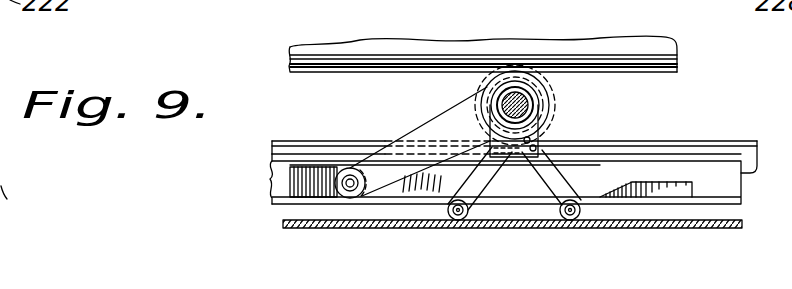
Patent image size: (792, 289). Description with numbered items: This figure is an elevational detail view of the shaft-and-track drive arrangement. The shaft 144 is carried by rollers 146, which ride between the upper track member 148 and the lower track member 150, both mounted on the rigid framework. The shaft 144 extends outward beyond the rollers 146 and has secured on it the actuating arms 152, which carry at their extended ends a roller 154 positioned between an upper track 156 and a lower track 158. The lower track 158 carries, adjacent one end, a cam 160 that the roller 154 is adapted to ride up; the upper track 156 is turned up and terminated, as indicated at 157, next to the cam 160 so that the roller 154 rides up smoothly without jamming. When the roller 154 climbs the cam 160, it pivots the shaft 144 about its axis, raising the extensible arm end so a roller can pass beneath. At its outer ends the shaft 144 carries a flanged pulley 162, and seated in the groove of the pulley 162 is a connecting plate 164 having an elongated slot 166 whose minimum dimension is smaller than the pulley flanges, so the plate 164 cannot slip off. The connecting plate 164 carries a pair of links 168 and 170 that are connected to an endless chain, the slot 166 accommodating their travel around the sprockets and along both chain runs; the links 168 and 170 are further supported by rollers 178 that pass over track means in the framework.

The shaft 144 is at (520, 110).
The rollers 146 is at (485, 77).
The upper track member 148 is at (437, 67).
The lower track member 150 is at (647, 143).
The actuating arms 152 is at (433, 128).
The roller 154 is at (365, 198).
The upper track 156 is at (328, 168).
The turned-up terminated end of upper track 157 is at (607, 145).
The lower track 158 is at (335, 207).
The cam 160 is at (663, 184).
The flanged pulley 162 is at (548, 90).
The connecting plate 164 is at (540, 135).
The elongated slot 166 is at (548, 124).
The link 168 is at (476, 182).
The link 170 is at (567, 164).
The rollers 178 is at (560, 220).